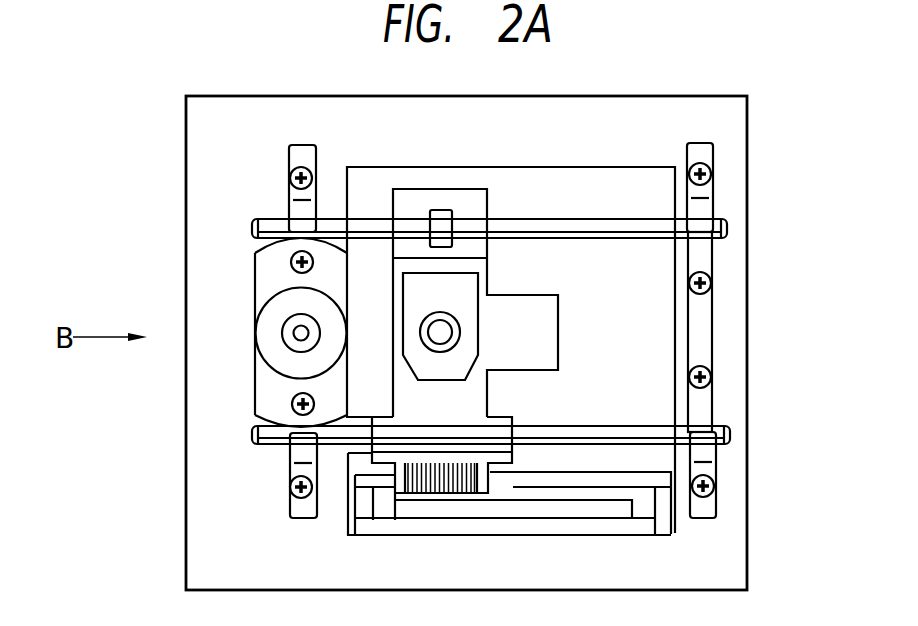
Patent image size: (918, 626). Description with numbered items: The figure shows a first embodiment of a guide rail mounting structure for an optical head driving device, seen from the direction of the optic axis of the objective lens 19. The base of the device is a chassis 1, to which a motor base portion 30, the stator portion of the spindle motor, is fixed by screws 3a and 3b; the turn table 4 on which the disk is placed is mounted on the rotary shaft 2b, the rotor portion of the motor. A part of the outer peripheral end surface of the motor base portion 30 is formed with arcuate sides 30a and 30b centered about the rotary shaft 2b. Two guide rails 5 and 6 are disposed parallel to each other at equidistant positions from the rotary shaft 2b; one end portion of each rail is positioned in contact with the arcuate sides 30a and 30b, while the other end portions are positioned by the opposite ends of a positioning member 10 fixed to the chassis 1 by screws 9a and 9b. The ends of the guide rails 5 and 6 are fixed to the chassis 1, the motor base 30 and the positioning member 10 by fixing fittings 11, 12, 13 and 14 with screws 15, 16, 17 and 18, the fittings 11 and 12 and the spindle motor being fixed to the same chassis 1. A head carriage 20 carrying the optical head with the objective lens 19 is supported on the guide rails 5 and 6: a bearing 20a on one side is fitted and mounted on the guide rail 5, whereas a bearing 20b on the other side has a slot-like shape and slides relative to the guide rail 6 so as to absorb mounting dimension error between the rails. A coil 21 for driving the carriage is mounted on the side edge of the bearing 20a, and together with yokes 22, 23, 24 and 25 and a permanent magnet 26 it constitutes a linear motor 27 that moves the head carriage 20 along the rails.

The chassis 1 is at (202, 568).
The rotary shaft 2b is at (298, 338).
The screw 3a is at (292, 410).
The screw 3b is at (308, 252).
The turn table 4 is at (265, 345).
The guide rail 5 is at (557, 444).
The guide rail 6 is at (612, 222).
The screw 9a is at (710, 387).
The screw 9b is at (710, 277).
The positioning member 10 is at (707, 337).
The fixing fitting 11 is at (295, 508).
The fixing fitting 12 is at (300, 147).
The fixing fitting 13 is at (712, 463).
The fixing fitting 14 is at (705, 212).
The screw 15 is at (303, 498).
The screw 16 is at (290, 165).
The screw 17 is at (713, 495).
The screw 18 is at (710, 164).
The objective lens 19 is at (450, 334).
The head carriage 20 is at (475, 248).
The bearing 20a is at (418, 493).
The bearing 20b is at (438, 217).
The coil 21 is at (458, 495).
The yoke 22 is at (362, 515).
The yoke 23 is at (608, 484).
The yoke 24 is at (663, 510).
The yoke 25 is at (640, 528).
The permanent magnet 26 is at (582, 516).
The linear motor 27 is at (503, 505).
The motor base portion 30 is at (263, 287).
The arcuate side 30a is at (265, 418).
The arcuate side 30b is at (260, 247).